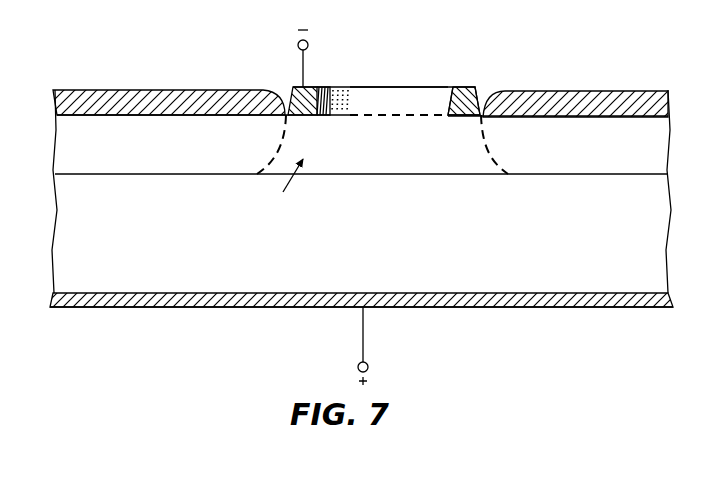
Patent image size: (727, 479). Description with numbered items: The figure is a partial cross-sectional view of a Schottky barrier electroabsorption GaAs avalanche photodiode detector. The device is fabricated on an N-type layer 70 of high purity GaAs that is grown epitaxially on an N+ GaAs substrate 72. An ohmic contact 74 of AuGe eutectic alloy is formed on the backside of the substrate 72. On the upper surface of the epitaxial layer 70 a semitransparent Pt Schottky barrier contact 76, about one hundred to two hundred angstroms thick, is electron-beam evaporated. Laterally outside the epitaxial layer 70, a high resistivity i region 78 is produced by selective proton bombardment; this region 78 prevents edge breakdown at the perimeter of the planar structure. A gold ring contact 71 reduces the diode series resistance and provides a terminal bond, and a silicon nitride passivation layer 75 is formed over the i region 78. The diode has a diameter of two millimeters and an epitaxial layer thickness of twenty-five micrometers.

The N-type layer 70 is at (383, 166).
The gold ring contact 71 is at (412, 87).
The N+ GaAs substrate 72 is at (470, 244).
The ohmic contact 74 is at (445, 307).
The Si3N4 passivation layer 75 is at (168, 90).
The semitransparent Pt Schottky barrier contact 76 is at (355, 87).
The high resistivity i region 78 is at (615, 159).